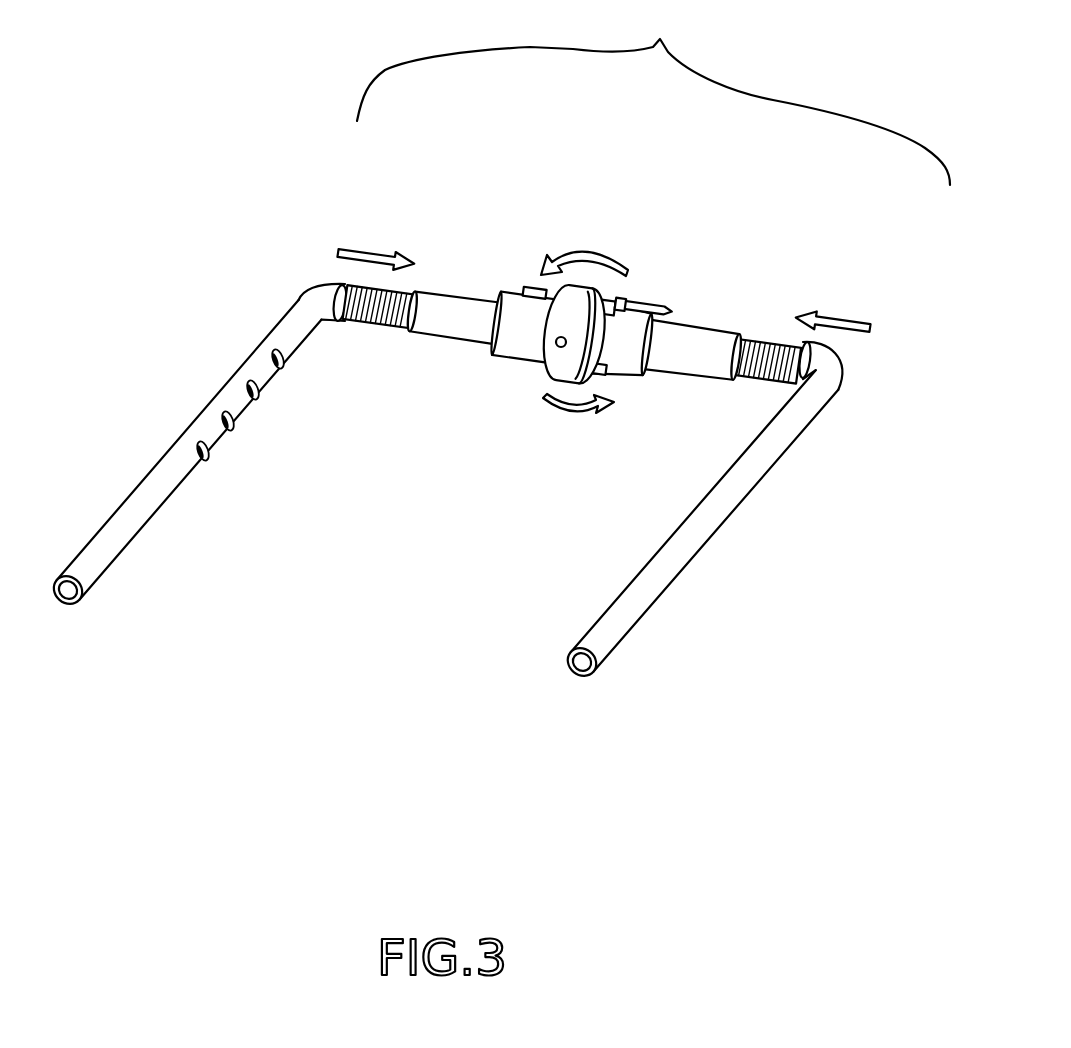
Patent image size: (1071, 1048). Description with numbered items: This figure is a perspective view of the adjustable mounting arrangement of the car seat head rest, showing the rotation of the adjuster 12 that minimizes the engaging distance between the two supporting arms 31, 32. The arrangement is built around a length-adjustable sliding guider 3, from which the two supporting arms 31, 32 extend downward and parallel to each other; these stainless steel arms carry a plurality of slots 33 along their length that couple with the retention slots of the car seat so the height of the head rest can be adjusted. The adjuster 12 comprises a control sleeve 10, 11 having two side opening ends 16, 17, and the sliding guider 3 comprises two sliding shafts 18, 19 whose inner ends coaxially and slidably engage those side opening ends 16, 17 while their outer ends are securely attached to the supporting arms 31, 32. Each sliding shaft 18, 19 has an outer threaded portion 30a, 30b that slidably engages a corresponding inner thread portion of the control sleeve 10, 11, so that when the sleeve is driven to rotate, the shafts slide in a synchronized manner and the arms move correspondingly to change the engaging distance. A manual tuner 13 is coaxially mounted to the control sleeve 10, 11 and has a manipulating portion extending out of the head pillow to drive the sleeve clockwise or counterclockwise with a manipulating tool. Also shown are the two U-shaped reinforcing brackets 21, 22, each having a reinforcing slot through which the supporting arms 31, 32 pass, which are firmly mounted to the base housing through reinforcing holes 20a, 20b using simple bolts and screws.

The sliding guider 3 is at (653, 92).
The control sleeve 10 is at (437, 300).
The control sleeve 11 is at (690, 322).
The adjuster 12 is at (572, 377).
The manual tuner 13 is at (556, 346).
The side opening end 16 is at (412, 332).
The side opening end 17 is at (741, 378).
The sliding shaft 18 is at (406, 290).
The sliding shaft 19 is at (773, 347).
The reinforcing hole 20a is at (533, 290).
The reinforcing hole 20b is at (655, 300).
The U-shaped reinforcing bracket 21 is at (498, 347).
The U-shaped reinforcing bracket 22 is at (631, 373).
The outer threaded portion 30a is at (340, 284).
The outer threaded portion 30b is at (764, 345).
The supporting arm 31 is at (173, 457).
The supporting arm 32 is at (713, 522).
The slot 33 is at (256, 398).